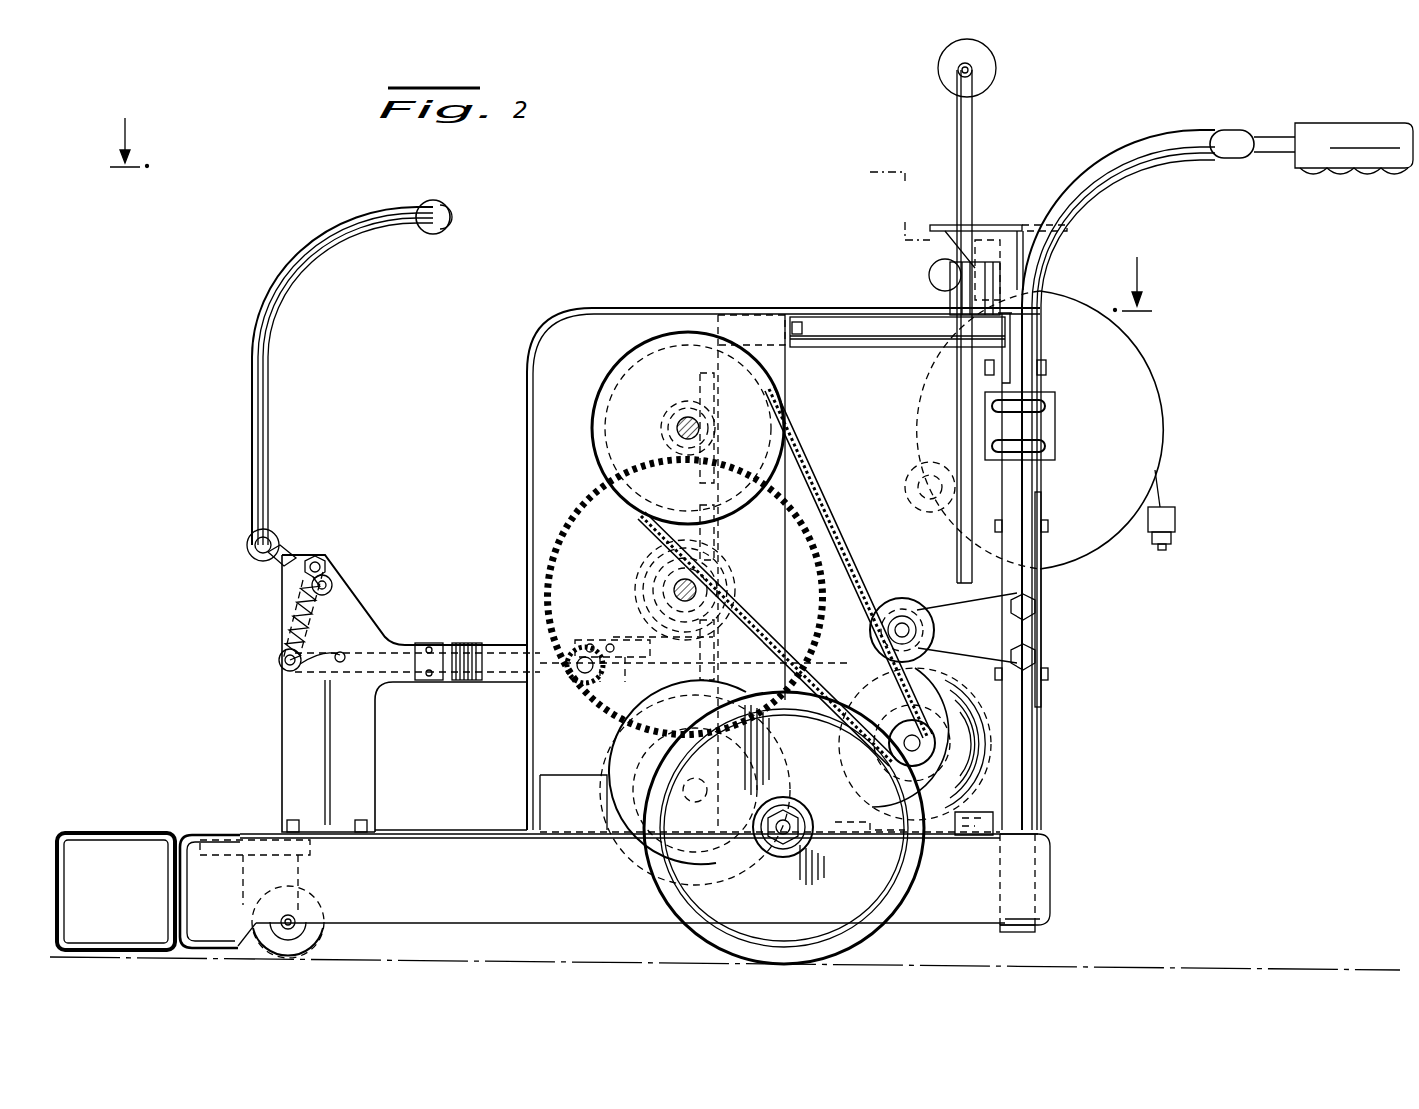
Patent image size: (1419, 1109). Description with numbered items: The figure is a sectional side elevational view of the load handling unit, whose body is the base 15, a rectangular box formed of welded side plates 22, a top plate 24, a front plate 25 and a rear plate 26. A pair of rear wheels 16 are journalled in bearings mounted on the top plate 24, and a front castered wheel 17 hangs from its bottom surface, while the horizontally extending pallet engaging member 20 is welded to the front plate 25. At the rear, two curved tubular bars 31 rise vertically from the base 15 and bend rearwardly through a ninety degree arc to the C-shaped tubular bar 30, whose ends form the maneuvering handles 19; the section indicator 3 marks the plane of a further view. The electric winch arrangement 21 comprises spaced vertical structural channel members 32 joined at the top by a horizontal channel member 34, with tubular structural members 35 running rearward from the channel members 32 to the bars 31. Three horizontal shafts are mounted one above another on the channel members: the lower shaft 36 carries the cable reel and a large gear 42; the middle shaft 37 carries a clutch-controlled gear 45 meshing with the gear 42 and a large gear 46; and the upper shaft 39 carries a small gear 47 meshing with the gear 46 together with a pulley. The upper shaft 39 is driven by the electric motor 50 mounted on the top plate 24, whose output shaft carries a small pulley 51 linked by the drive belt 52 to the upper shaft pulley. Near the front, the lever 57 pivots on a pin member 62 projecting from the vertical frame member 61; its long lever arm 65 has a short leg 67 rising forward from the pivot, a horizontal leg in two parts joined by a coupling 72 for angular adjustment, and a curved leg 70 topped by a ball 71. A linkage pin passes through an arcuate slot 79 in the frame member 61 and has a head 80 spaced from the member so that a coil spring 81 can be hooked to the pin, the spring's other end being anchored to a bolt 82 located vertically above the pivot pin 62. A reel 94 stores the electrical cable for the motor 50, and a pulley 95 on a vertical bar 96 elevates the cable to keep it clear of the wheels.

The section line 3- 3 is at (631, 226).
The base 15 is at (1018, 870).
The rear wheels 16 is at (858, 932).
The front castered wheel 17 is at (316, 936).
The maneuvering handles 19 is at (1278, 168).
The pallet engaging member 20 is at (55, 840).
The electric winch arrangement 21 is at (548, 549).
The side plates 22 is at (566, 912).
The top plate 24 is at (443, 834).
The front plate 25 is at (185, 905).
The rear plate 26 is at (1052, 911).
The tubular bar 30 is at (1212, 143).
The curved tubular bars 31 is at (1020, 545).
The structural channel members 32 is at (780, 365).
The horizontal channel member 34 is at (754, 312).
The tubular structural members 35 is at (858, 320).
The lower shaft 36 is at (573, 830).
The middle shaft 37 is at (678, 585).
The upper shaft 39 is at (674, 421).
The large gear 42 is at (562, 733).
The gear 45 is at (640, 606).
The large gear 46 is at (550, 594).
The small gear 47 is at (663, 431).
The electric motor 50 is at (980, 765).
The small pulley 51 is at (948, 757).
The drive belt 52 is at (945, 690).
The lever 57 is at (357, 592).
The vertical frame member 61 is at (288, 744).
The pin member 62 is at (325, 600).
The long lever arm 65 is at (242, 425).
The short leg 67 is at (272, 562).
The curved leg 70 is at (256, 360).
The ball 71 is at (449, 205).
The coupling 72 is at (245, 541).
The arcuate slot 79 is at (318, 673).
The head 80 is at (283, 668).
The coil spring 81 is at (292, 618).
The bolt 82 is at (325, 558).
The reel 94 is at (1152, 397).
The pulley 95 is at (990, 72).
The vertical bar 96 is at (975, 135).